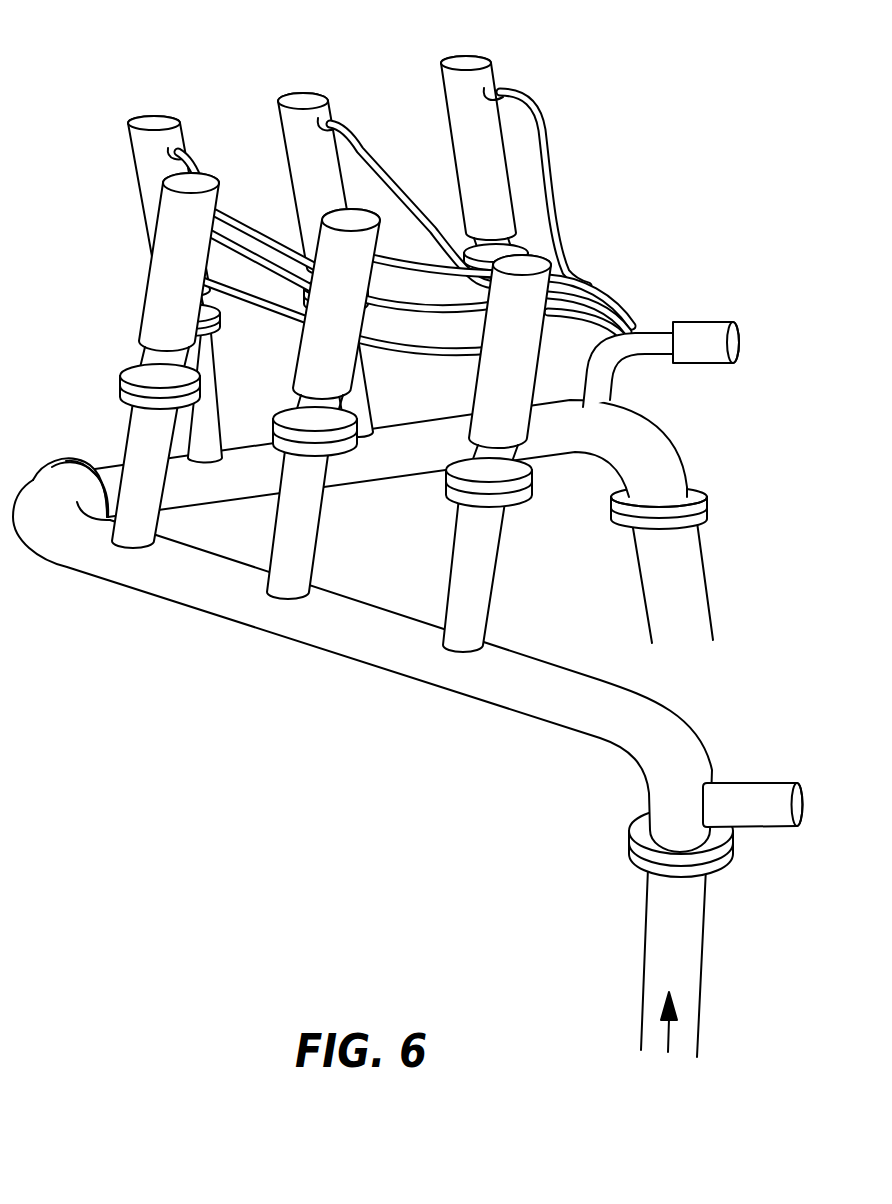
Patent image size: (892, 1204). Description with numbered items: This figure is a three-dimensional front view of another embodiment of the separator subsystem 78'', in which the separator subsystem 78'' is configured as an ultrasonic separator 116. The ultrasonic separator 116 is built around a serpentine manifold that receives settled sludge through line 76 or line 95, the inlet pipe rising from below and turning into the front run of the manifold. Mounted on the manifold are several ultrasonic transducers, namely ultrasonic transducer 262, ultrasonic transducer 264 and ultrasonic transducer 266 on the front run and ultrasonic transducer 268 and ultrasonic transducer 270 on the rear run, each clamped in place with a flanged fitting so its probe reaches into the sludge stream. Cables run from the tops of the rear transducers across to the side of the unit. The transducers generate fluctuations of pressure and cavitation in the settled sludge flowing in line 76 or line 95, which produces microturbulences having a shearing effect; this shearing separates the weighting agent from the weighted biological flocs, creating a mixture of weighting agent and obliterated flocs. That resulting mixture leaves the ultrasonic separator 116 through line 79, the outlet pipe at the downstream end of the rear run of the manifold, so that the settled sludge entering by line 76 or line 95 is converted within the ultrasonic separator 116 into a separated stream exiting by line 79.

The separator subsystem 78'' is at (408, 584).
The ultrasonic separator 116 is at (672, 226).
The ultrasonic transducer 262 is at (527, 381).
The ultrasonic transducer 264 is at (350, 338).
The ultrasonic transducer 266 is at (193, 288).
The ultrasonic transducer 268 is at (330, 168).
The ultrasonic transducer 270 is at (495, 142).
The line 79 is at (680, 563).
The line 76 is at (634, 932).
The line 95 is at (654, 923).